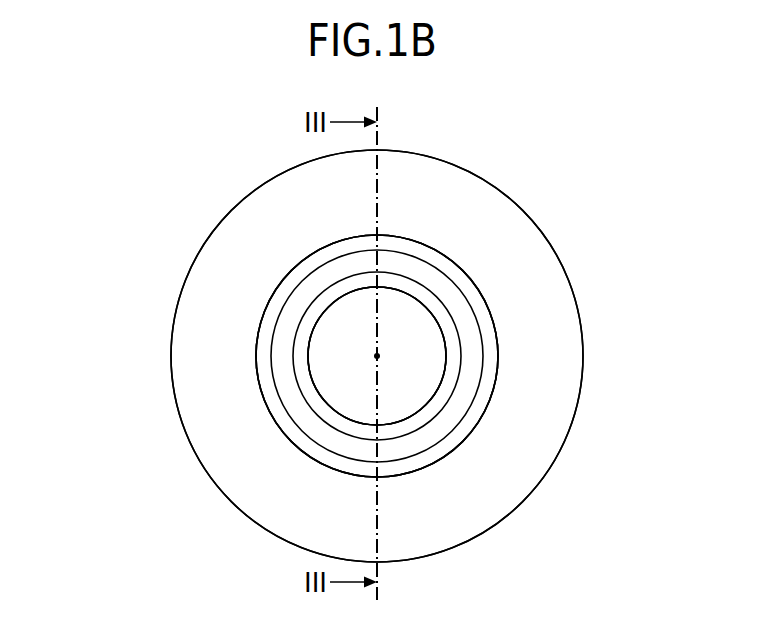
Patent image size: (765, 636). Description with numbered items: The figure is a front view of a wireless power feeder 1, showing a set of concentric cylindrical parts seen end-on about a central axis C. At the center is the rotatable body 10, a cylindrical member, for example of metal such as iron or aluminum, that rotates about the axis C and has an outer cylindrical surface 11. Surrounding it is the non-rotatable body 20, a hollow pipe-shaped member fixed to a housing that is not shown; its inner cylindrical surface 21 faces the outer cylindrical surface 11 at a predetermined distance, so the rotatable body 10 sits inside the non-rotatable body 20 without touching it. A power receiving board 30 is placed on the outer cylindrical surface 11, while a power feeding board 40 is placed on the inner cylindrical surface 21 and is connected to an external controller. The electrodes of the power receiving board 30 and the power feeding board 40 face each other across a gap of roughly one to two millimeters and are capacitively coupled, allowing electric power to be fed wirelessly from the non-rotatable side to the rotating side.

The wireless power feeder 1 is at (89, 129).
The rotatable body 10 is at (337, 358).
The outer cylindrical surface 11 is at (310, 383).
The non-rotatable body 20 is at (262, 233).
The inner cylindrical surface 21 is at (268, 298).
The power receiving board 30 is at (450, 373).
The power feeding board 40 is at (477, 298).
The axis C is at (377, 356).